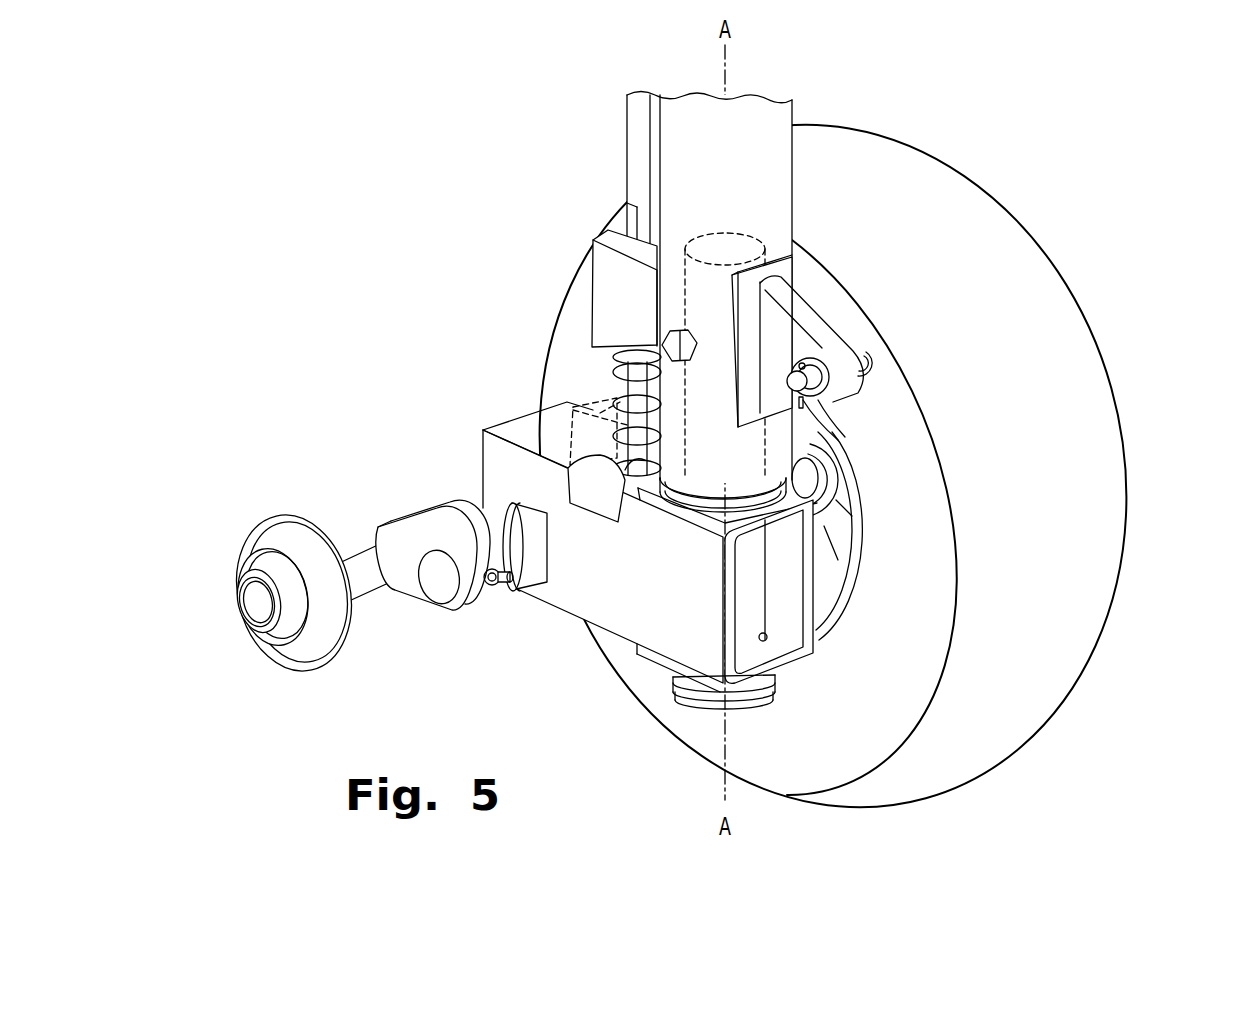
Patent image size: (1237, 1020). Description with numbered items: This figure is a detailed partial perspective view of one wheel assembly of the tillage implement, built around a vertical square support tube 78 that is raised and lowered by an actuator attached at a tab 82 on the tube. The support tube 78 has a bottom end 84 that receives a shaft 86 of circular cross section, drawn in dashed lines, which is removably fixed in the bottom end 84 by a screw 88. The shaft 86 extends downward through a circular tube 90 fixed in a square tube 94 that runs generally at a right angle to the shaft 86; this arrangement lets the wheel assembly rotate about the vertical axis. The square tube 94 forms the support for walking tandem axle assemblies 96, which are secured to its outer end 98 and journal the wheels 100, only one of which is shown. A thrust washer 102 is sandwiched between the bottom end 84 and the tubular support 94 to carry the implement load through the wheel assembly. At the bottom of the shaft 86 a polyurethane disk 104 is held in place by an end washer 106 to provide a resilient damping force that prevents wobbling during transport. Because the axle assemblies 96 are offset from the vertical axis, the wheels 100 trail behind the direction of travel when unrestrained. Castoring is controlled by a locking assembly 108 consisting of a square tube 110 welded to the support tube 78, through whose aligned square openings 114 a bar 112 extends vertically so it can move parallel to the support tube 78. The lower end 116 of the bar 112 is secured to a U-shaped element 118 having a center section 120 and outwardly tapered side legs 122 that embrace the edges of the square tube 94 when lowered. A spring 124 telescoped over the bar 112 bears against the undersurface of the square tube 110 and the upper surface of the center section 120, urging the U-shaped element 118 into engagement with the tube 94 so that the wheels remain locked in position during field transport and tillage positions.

The support tube 78 is at (780, 120).
The tab 82 is at (813, 325).
The bottom end 84 is at (822, 496).
The shaft 86 is at (767, 440).
The screw 88 is at (668, 348).
The circular tube 90 is at (767, 645).
The square tube 94 is at (623, 612).
The walking tandem axle assembly 96 is at (437, 520).
The outer end 98 is at (483, 423).
The wheel 100 is at (1105, 374).
The thrust washer 102 is at (692, 512).
The polyurethane disk 104 is at (777, 687).
The end washer 106 is at (697, 703).
The locking assembly 108 is at (587, 240).
The square tube 110 is at (590, 283).
The bar 112 is at (635, 139).
The square openings 114 is at (637, 237).
The lower end 116 is at (627, 412).
The U-shaped element 118 is at (566, 474).
The center section 120 is at (627, 450).
The side legs 122 is at (600, 505).
The spring 124 is at (618, 400).